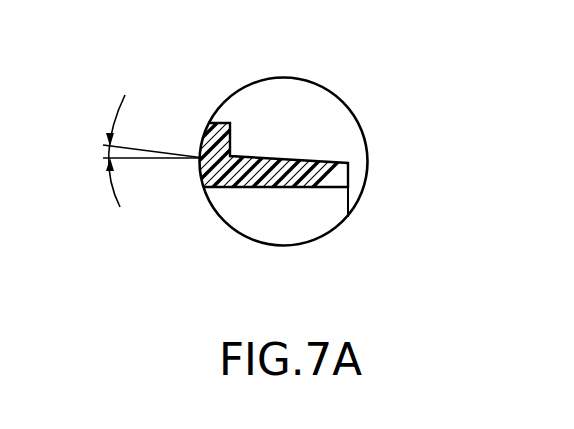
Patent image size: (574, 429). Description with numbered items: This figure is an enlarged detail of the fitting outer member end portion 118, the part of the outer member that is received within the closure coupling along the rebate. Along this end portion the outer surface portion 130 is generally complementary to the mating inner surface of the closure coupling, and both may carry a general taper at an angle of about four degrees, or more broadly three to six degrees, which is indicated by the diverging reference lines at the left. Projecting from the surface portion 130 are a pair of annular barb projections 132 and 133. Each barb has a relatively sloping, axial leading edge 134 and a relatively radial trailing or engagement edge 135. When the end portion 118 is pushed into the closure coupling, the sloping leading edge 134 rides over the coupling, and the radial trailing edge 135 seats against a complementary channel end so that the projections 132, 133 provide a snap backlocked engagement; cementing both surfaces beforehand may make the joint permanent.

The outer member end portion 118 is at (255, 186).
The outer surface portion 130 is at (250, 148).
The annular barb projection 132 is at (283, 165).
The annular barb projection 133 is at (307, 162).
The leading edge 134 is at (284, 162).
The trailing edge 135 is at (271, 157).